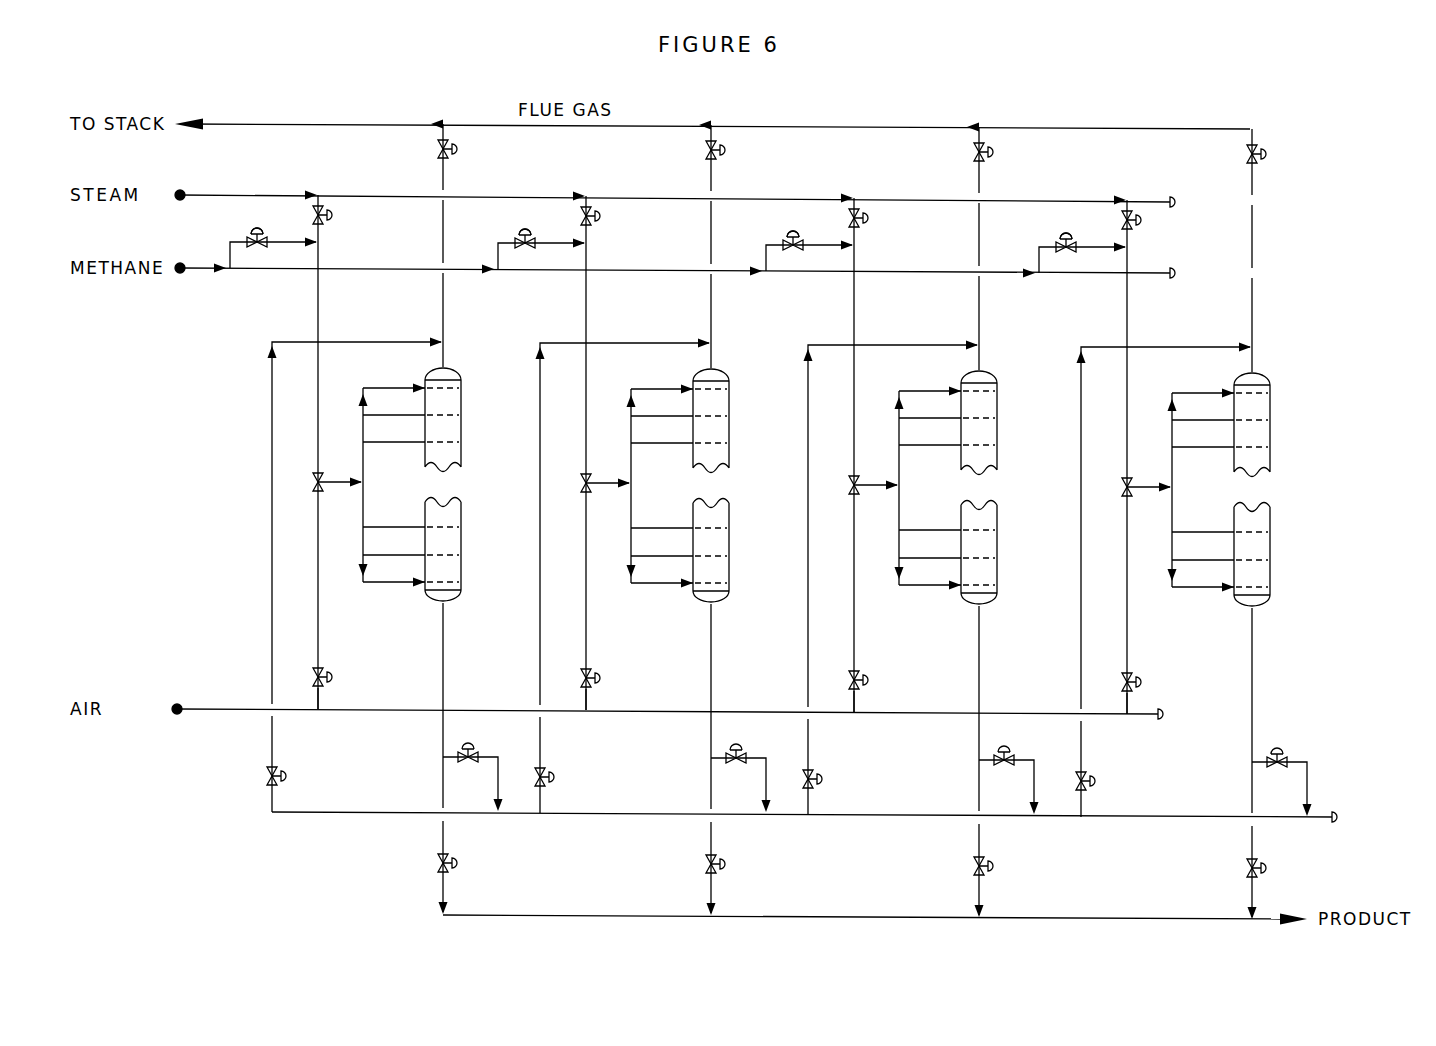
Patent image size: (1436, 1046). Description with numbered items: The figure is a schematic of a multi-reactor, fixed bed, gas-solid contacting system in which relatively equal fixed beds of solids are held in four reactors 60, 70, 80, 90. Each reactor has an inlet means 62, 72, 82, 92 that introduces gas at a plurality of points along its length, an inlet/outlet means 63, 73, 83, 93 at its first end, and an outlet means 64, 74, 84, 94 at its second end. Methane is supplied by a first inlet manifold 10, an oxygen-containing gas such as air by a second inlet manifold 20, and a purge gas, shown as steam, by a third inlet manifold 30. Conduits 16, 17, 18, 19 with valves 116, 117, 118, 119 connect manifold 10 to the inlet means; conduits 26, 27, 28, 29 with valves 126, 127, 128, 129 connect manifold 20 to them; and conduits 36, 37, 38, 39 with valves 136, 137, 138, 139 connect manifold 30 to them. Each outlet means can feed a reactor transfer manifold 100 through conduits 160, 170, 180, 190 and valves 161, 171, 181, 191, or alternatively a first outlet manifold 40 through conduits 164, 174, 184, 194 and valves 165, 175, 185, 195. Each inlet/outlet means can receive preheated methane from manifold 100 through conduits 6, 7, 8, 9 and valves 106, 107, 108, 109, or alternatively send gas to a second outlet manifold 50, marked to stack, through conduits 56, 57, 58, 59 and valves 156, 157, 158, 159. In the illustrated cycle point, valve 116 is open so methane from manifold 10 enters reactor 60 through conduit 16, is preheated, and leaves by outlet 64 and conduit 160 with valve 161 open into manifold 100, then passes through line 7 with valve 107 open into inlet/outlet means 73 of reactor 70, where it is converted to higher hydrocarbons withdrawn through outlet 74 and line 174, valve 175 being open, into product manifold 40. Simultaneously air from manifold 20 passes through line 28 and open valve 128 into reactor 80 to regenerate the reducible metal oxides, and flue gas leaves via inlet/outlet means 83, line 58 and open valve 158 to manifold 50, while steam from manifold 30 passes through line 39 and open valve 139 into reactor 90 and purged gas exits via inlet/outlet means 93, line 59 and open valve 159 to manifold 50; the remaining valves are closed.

The conduit 6 is at (271, 565).
The line 7 is at (611, 578).
The conduit 8 is at (879, 580).
The conduit 9 is at (1152, 582).
The first inlet manifold 10 is at (204, 273).
The second inlet manifold 20 is at (240, 713).
The third inlet manifold 30 is at (267, 196).
The first outlet manifold 40 is at (586, 920).
The second outlet manifold 50 is at (288, 126).
The reactor transfer manifold 100 is at (368, 816).
The conduit 16 is at (229, 247).
The conduit 17 is at (523, 251).
The conduit 18 is at (791, 253).
The conduit 19 is at (1064, 255).
The conduit 26 is at (320, 705).
The conduit 27 is at (612, 696).
The line 28 is at (880, 698).
The conduit 29 is at (1153, 700).
The conduit 36 is at (320, 234).
The conduit 37 is at (604, 451).
The conduit 38 is at (872, 453).
The line 39 is at (1145, 455).
The conduit 56 is at (435, 186).
The conduit 57 is at (691, 193).
The line 58 is at (959, 195).
The line 59 is at (1232, 198).
The reactor 60 is at (431, 600).
The reactor 70 is at (695, 497).
The reactor 80 is at (963, 499).
The reactor 90 is at (1236, 501).
The inlet means 62 is at (379, 458).
The inlet means 72 is at (637, 486).
The inlet means 82 is at (905, 488).
The inlet means 92 is at (1178, 490).
The inlet/outlet means 63 is at (445, 362).
The inlet/outlet means 73 is at (723, 321).
The inlet/outlet means 83 is at (991, 323).
The inlet/outlet means 93 is at (1264, 325).
The outlet means 64 is at (445, 660).
The outlet means 74 is at (727, 706).
The outlet means 84 is at (995, 708).
The outlet means 94 is at (1268, 710).
The valve 106 is at (264, 778).
The valve 107 is at (519, 784).
The valve 108 is at (787, 786).
The valve 109 is at (1060, 788).
The valve 116 is at (252, 230).
The valve 117 is at (499, 219).
The valve 118 is at (767, 221).
The valve 119 is at (1040, 223).
The valve 126 is at (330, 672).
The valve 127 is at (613, 665).
The valve 128 is at (881, 667).
The valve 129 is at (1154, 669).
The valve 136 is at (333, 216).
The valve 137 is at (618, 215).
The valve 138 is at (886, 217).
The valve 139 is at (1159, 219).
The valve 156 is at (458, 150).
The valve 157 is at (740, 150).
The valve 158 is at (1008, 152).
The valve 159 is at (1281, 154).
The conduit 160 is at (496, 793).
The conduit 170 is at (741, 785).
The conduit 180 is at (1009, 787).
The conduit 190 is at (1282, 789).
The valve 161 is at (470, 742).
The valve 171 is at (753, 740).
The valve 181 is at (1021, 742).
The valve 191 is at (1294, 744).
The conduit 164 is at (440, 845).
The line 174 is at (684, 868).
The conduit 184 is at (952, 870).
The conduit 194 is at (1225, 872).
The valve 165 is at (456, 870).
The valve 175 is at (739, 873).
The valve 185 is at (1007, 875).
The valve 195 is at (1280, 877).